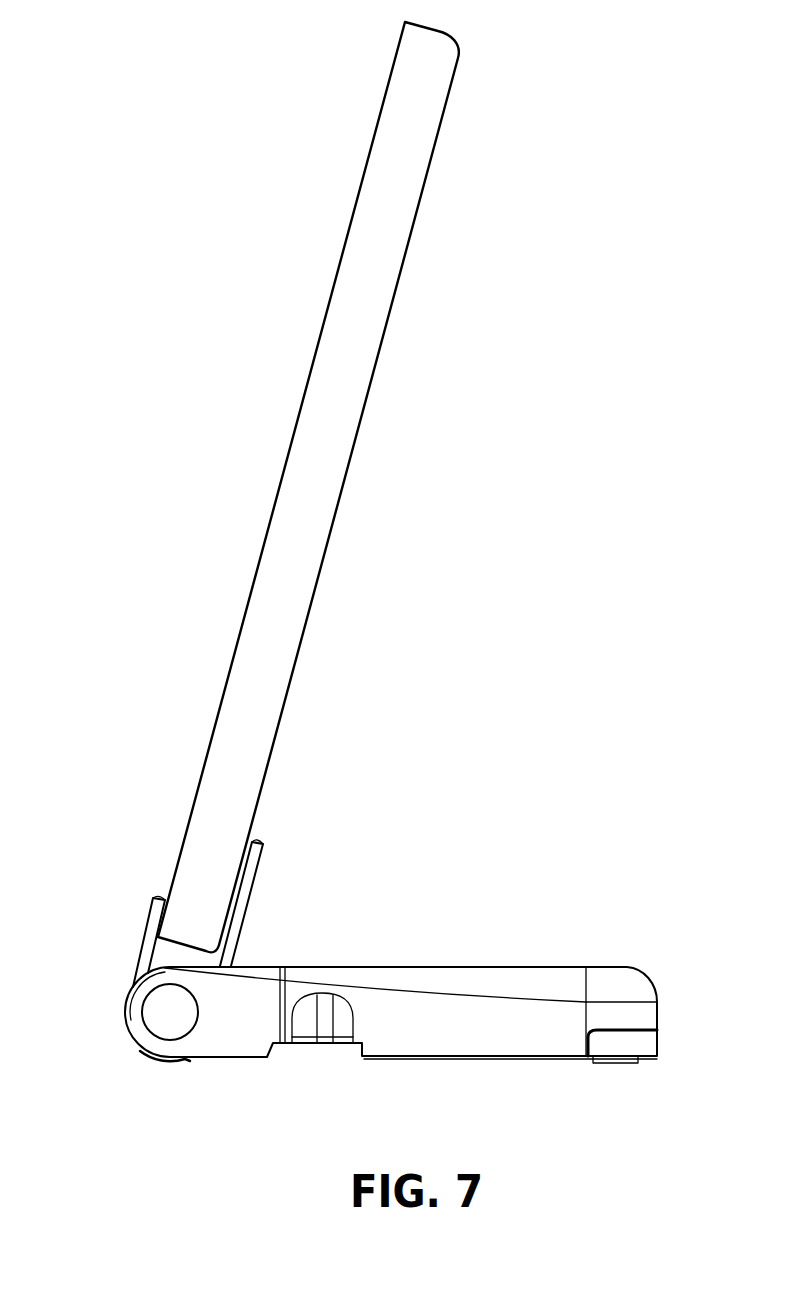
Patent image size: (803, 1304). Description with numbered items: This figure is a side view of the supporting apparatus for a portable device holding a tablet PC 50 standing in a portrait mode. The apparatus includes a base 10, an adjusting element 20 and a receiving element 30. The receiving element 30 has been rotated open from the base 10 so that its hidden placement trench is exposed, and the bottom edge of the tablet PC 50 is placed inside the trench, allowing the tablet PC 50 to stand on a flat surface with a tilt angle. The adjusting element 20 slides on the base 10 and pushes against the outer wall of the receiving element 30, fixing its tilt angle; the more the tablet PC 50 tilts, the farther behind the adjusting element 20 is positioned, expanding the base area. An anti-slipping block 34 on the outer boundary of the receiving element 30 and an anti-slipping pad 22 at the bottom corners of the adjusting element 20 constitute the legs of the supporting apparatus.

The base 10 is at (242, 1020).
The adjusting element 20 is at (498, 1015).
The anti-slipping pad 22 is at (613, 1062).
The receiving element 30 is at (167, 960).
The anti-slipping block 34 is at (152, 1058).
The tablet PC 50 is at (327, 415).